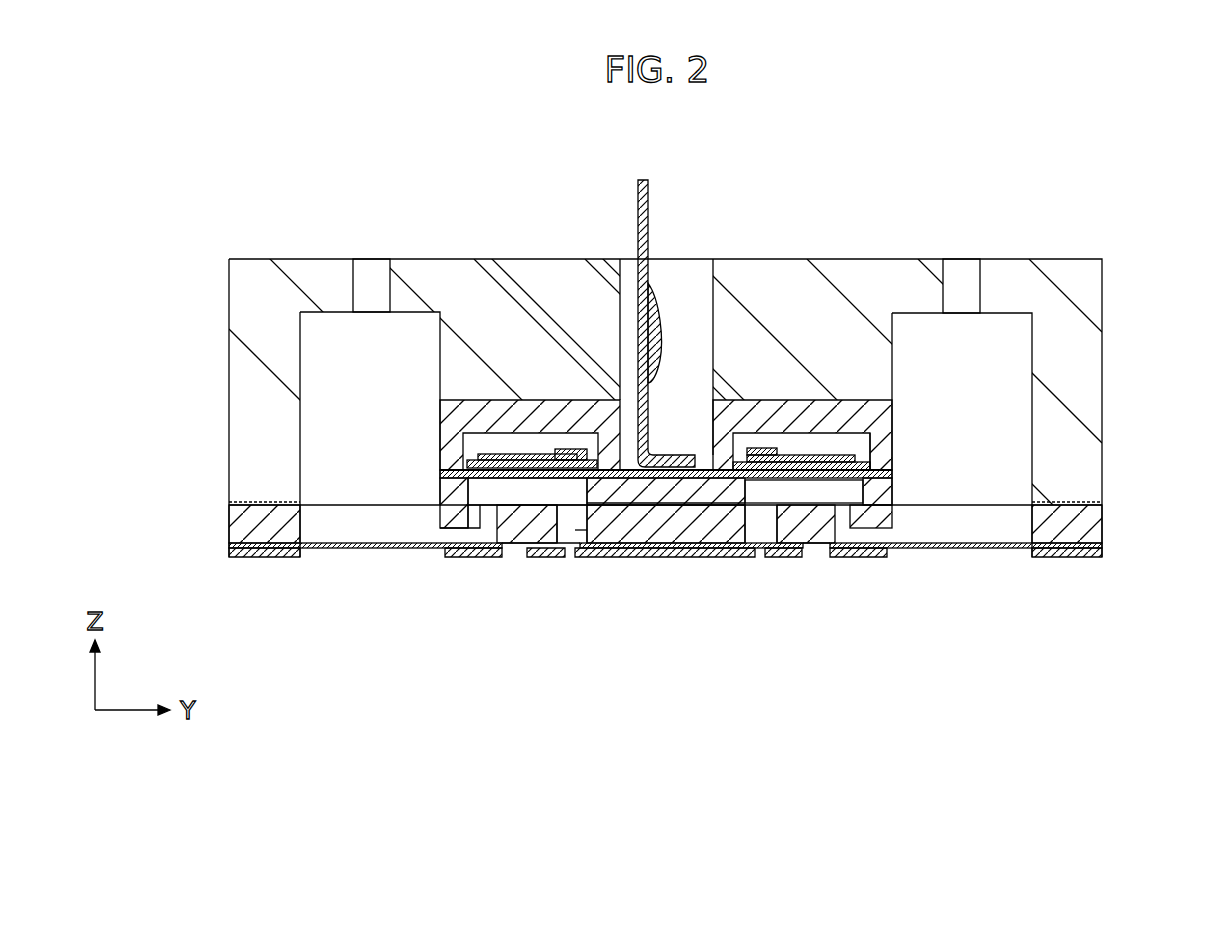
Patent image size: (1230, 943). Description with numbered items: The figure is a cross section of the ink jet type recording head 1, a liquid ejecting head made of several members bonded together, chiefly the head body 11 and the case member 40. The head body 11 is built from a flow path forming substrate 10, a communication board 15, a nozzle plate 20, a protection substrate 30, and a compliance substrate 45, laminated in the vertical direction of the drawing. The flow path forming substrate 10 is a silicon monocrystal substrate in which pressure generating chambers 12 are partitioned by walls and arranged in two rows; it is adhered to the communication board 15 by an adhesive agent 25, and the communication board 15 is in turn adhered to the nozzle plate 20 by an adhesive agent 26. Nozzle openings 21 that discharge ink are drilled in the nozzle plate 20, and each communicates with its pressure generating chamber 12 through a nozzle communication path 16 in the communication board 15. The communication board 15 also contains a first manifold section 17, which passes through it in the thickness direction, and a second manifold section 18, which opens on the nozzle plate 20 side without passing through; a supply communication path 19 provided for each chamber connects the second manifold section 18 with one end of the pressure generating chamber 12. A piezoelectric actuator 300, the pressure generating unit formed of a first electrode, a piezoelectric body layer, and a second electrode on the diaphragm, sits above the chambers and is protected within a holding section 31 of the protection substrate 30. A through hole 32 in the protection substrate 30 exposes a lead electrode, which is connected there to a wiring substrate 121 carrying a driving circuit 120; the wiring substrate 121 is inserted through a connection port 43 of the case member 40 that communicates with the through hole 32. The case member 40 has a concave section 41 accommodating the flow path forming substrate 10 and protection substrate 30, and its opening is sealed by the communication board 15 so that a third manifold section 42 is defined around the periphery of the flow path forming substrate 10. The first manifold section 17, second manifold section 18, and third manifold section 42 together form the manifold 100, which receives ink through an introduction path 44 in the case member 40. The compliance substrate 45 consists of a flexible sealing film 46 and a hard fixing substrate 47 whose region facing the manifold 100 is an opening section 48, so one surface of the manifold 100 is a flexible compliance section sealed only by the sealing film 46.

The ink jet type recording head 1 is at (1156, 246).
The flow path forming substrate 10 is at (462, 488).
The head body 11 is at (419, 590).
The pressure generating chambers 12 is at (575, 530).
The communication board 15 is at (458, 510).
The nozzle communication path 16 is at (572, 530).
The first manifold section 17 is at (1030, 527).
The second manifold section 18 is at (884, 525).
The supply communication path 19 is at (855, 560).
The nozzle plate 20 is at (531, 584).
The nozzle openings 21 is at (763, 520).
The adhesive agent 25 is at (693, 548).
The adhesive agent 26 is at (640, 560).
The protection substrate 30 is at (453, 438).
The holding section 31 is at (517, 443).
The through hole 32 is at (690, 427).
The case member 40 is at (1020, 270).
The concave section 41 is at (885, 412).
The third manifold section 42 is at (1032, 450).
The connection port 43 is at (621, 293).
The introduction path 44 is at (360, 280).
The compliance substrate 45 is at (270, 584).
The sealing film 46 is at (250, 557).
The fixing substrate 47 is at (293, 557).
The opening section 48 is at (1023, 555).
The manifold 100 is at (976, 475).
The driving circuit 120 is at (652, 330).
The wiring substrate 121 is at (645, 212).
The piezoelectric actuator 300 is at (824, 438).